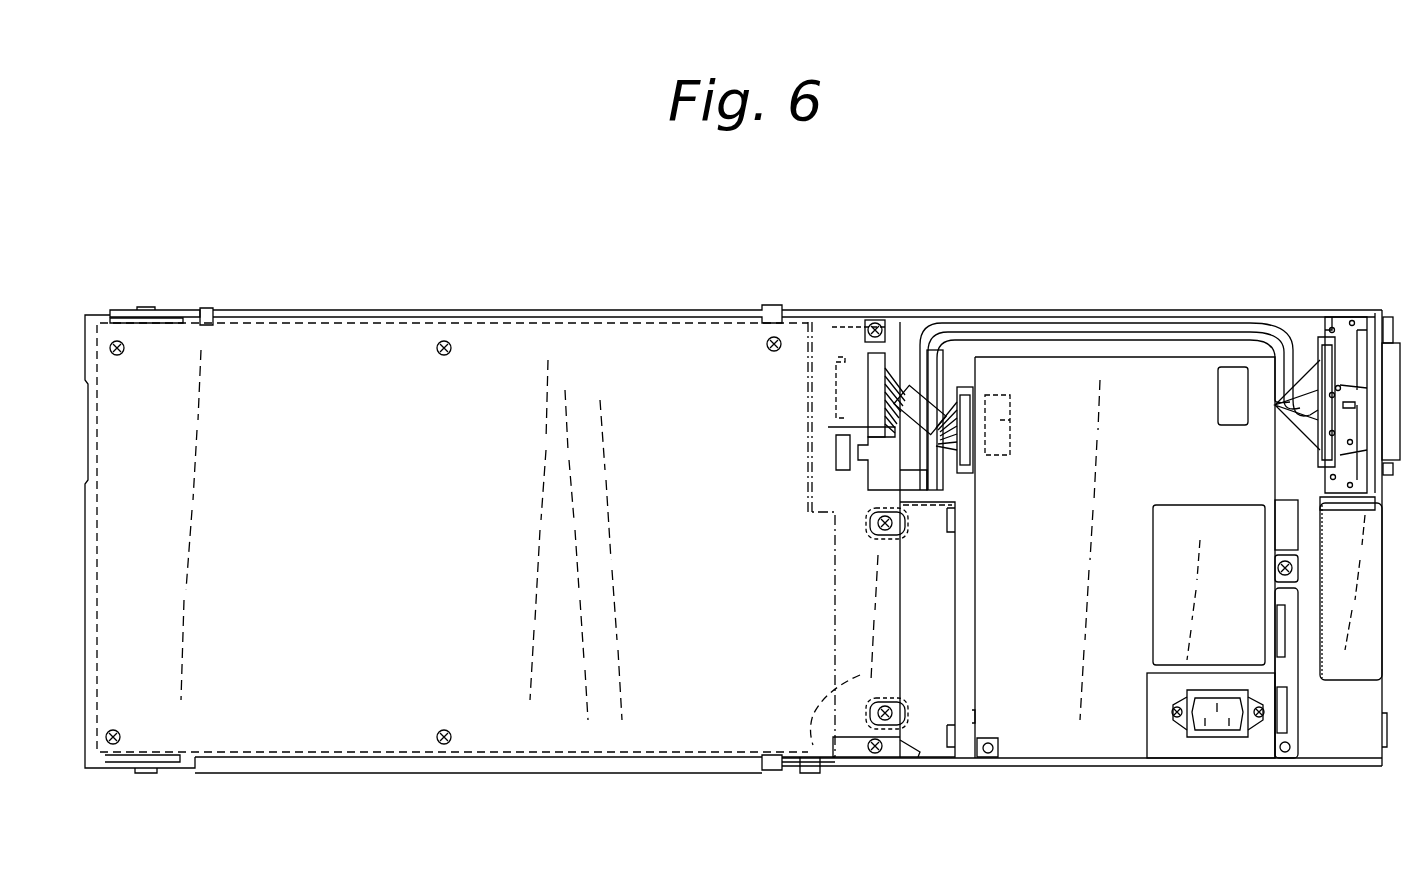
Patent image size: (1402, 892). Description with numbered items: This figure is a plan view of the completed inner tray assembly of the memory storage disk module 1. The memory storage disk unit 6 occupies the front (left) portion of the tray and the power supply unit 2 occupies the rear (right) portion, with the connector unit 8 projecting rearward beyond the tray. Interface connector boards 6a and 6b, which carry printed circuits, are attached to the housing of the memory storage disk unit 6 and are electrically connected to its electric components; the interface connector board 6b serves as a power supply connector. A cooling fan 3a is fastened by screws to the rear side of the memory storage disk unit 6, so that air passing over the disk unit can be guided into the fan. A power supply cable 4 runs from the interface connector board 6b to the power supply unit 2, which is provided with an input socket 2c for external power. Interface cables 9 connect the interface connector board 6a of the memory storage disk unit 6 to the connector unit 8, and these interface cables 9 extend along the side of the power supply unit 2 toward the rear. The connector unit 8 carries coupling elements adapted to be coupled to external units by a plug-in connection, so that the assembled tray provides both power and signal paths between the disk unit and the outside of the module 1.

The memory storage disk module 1 is at (632, 292).
The power supply unit 2 is at (1040, 742).
The input socket 2c is at (1205, 750).
The cooling fan 3a is at (933, 733).
The power supply cable 4 is at (913, 403).
The memory storage disk unit 6 is at (612, 730).
The interface connector board 6a is at (816, 745).
The interface connector board 6b is at (865, 355).
The connector unit 8 is at (1372, 322).
The interface cables 9 is at (1118, 310).